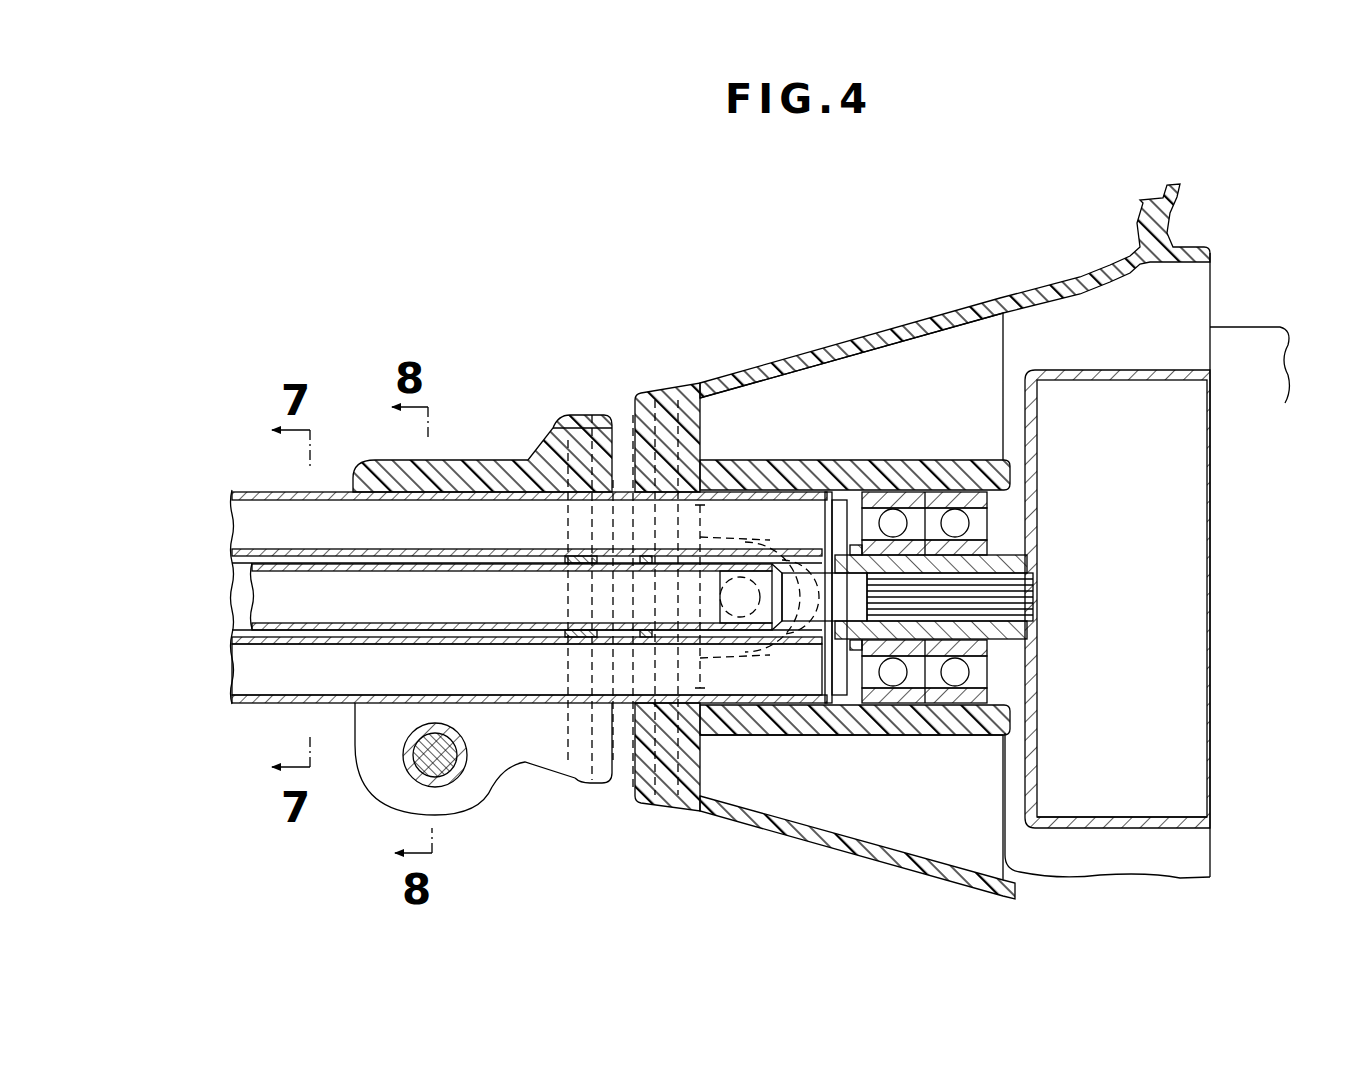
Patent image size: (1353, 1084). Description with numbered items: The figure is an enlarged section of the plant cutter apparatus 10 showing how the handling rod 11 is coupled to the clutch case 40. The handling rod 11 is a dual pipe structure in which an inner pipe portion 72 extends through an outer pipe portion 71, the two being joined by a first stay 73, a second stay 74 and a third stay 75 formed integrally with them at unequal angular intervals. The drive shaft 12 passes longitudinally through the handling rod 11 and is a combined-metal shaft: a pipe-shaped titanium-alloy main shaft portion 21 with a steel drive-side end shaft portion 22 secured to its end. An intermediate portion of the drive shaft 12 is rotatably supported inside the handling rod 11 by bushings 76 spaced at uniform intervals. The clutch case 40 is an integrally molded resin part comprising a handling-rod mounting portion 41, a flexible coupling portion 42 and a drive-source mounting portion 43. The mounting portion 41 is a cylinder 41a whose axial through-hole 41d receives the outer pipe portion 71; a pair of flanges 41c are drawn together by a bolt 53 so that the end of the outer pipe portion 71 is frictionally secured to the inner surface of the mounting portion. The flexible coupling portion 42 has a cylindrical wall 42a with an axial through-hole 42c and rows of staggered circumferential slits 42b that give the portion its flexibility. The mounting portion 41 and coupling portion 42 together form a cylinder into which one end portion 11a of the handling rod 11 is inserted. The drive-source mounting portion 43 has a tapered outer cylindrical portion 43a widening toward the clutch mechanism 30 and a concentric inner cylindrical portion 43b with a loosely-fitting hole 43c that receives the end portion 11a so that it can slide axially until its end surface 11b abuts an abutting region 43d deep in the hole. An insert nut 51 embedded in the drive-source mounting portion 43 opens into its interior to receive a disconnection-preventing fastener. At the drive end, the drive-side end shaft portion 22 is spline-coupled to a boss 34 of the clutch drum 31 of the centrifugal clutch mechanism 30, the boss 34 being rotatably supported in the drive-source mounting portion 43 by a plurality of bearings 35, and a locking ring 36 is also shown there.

The plant cutter apparatus 10 is at (226, 240).
The handling rod 11 is at (182, 425).
The outer pipe portion 71 is at (258, 492).
The inner pipe portion 72 is at (258, 550).
The first stay 73 is at (262, 672).
The second stay 74 is at (475, 713).
The third stay 75 is at (475, 713).
The bushings 76 is at (440, 633).
The one end portion of the handling rod 11a is at (513, 717).
The end surface 11b is at (833, 520).
The drive shaft 12 is at (247, 580).
The main shaft portion 21 is at (265, 607).
The drive-side end shaft portion 22 is at (1017, 592).
The clutch mechanism 30 is at (1203, 761).
The clutch drum 31 is at (1123, 828).
The boss 34 is at (1017, 552).
The bearings 35 is at (953, 700).
The locking ring 36 is at (855, 655).
The clutch case 40 is at (940, 305).
The handling-rod mounting portion 41 is at (548, 193).
The cylinder 41a is at (457, 470).
The flanges 41c is at (463, 793).
The axial through-hole 41d is at (497, 503).
The flexible coupling portion 42 is at (693, 193).
The cylindrical wall 42a is at (680, 430).
The circumferential slits 42b is at (655, 440).
The axial through-hole 42c is at (607, 490).
The drive-source mounting portion 43 is at (1250, 197).
The tapered outer cylindrical portion 43a is at (800, 840).
The inner cylindrical portion 43b is at (810, 732).
The loosely-fitting hole 43c is at (745, 475).
The abutting region 43d is at (818, 462).
The insert nut 51 is at (775, 625).
The bolt 53 is at (413, 777).